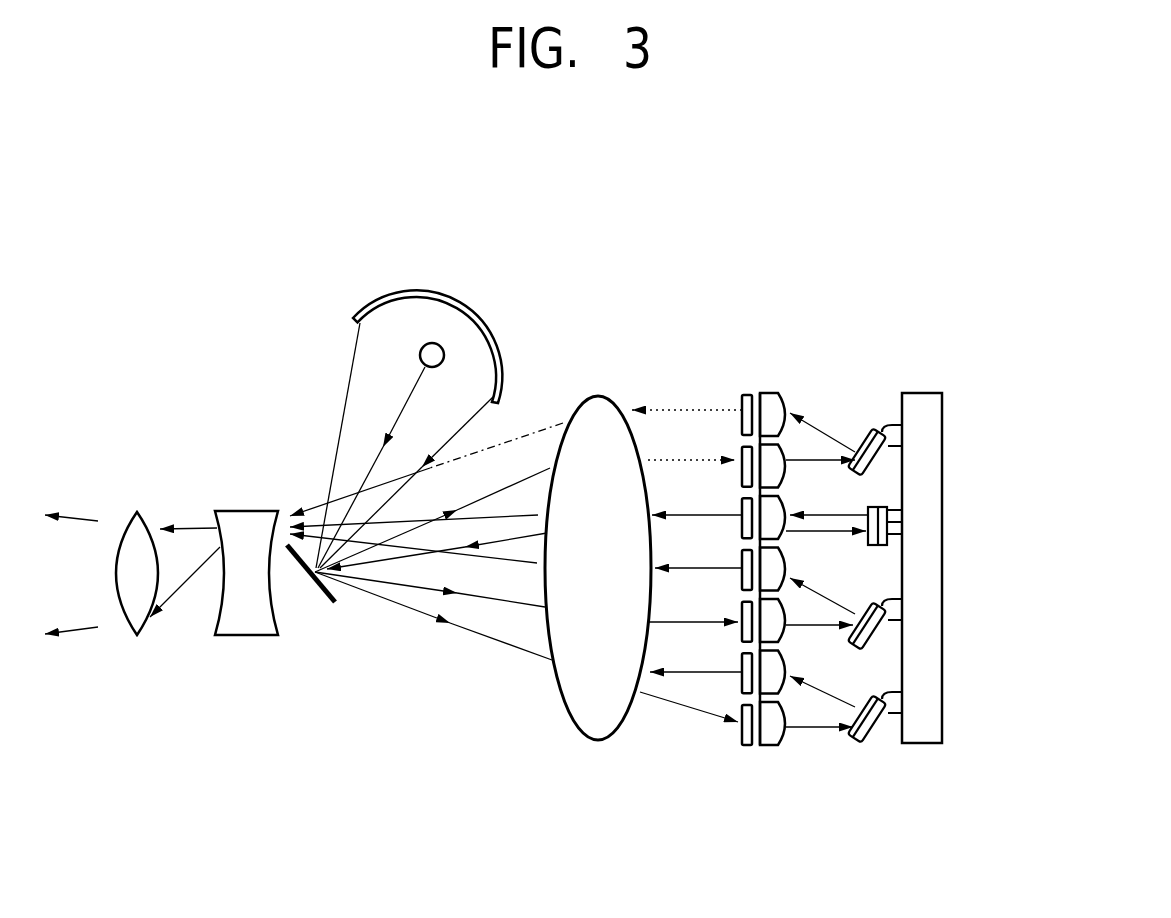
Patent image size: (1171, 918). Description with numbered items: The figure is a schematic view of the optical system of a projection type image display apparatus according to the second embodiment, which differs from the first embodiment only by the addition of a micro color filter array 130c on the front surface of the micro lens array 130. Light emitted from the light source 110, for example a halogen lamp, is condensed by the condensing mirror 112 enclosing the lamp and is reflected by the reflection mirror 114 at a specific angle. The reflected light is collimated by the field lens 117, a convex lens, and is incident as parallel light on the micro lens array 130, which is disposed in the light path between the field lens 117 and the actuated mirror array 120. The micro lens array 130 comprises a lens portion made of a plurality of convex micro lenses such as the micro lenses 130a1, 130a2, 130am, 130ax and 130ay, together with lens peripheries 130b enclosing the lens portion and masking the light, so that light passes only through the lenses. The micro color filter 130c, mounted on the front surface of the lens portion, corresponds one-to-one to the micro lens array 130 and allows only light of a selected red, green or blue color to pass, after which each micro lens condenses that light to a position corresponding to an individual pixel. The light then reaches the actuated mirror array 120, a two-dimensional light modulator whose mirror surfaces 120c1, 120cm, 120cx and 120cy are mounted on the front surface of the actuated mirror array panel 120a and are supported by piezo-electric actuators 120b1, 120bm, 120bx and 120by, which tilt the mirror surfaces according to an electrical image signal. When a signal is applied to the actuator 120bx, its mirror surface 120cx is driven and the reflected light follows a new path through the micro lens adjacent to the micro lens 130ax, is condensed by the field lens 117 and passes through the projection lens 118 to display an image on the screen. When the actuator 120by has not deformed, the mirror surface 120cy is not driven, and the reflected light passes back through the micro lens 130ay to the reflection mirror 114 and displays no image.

The light source 110 is at (432, 343).
The condensing mirror 112 is at (460, 300).
The reflection mirror 114 is at (320, 607).
The field lens 117 is at (594, 415).
The projection lens 118 is at (232, 635).
The actuated mirror array 120 is at (967, 586).
The actuated mirror array panel 120a is at (922, 402).
The actuator 120bm is at (875, 457).
The mirror surface 120cm is at (880, 426).
The actuator 120bx is at (880, 533).
The mirror surface 120cx is at (878, 510).
The actuator 120by is at (875, 628).
The mirror surface 120cy is at (880, 598).
The actuator 120b1 is at (875, 720).
The mirror surface 120c1 is at (880, 692).
The micro lens array 130 is at (850, 589).
The micro lens 130a1 is at (768, 739).
The micro lens 130a2 is at (786, 700).
The micro lens 130am is at (773, 470).
The micro lens 130ax is at (767, 513).
The micro lens 130ay is at (773, 660).
The lens peripheries 130b is at (758, 700).
The micro color filter array 130c is at (742, 685).